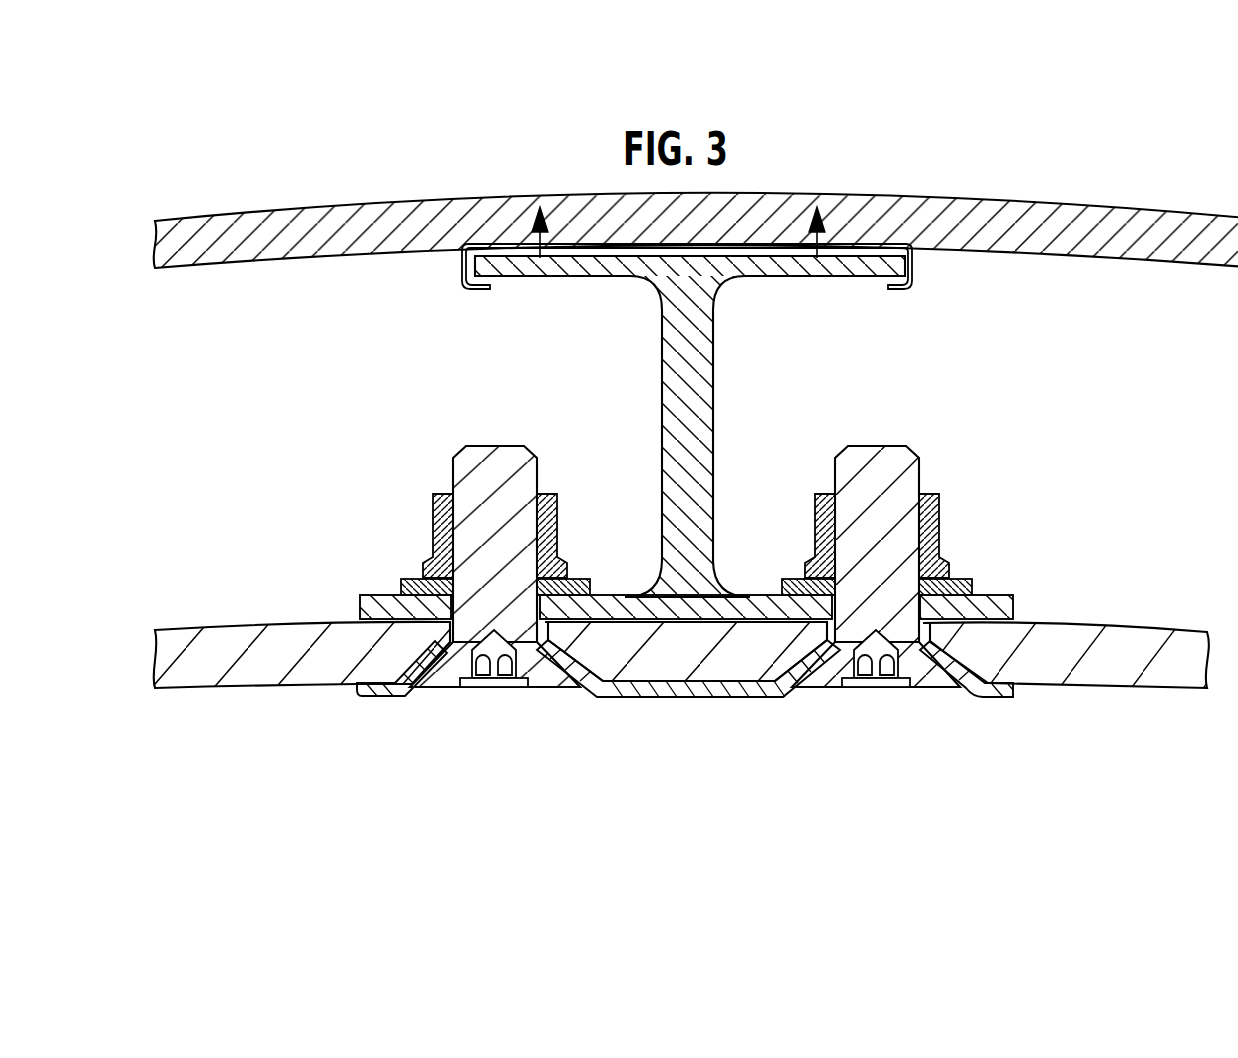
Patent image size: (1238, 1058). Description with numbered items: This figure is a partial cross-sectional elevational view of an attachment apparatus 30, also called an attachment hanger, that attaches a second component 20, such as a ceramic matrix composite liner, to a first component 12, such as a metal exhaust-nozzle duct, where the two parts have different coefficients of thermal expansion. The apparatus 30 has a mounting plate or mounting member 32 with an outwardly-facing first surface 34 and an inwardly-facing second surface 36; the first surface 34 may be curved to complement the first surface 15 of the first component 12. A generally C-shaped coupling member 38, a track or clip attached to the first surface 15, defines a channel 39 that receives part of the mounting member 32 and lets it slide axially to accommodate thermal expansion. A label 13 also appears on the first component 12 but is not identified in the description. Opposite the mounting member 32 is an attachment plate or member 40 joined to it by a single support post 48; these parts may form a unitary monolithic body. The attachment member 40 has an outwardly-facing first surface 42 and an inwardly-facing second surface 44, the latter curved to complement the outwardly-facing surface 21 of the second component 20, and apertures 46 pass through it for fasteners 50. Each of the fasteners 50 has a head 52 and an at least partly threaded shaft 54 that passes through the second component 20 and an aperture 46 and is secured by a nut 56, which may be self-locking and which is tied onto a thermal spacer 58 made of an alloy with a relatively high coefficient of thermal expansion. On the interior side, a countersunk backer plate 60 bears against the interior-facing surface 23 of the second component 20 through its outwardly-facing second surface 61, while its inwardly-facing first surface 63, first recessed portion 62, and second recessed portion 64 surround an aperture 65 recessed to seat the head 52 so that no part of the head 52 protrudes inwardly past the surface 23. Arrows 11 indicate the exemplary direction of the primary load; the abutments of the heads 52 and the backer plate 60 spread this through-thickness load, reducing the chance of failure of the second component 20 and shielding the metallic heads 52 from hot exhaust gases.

The arrows 11 is at (536, 240).
The first component 12 is at (1092, 243).
The upper panel outer surface 13 is at (1000, 208).
The first surface of the first component 15 is at (1000, 254).
The second component 20 is at (1137, 656).
The outwardly-facing surface of the second component 21 is at (272, 621).
The interior-facing surface of the second component 23 is at (258, 689).
The attachment apparatus 30 is at (393, 384).
The mounting member 32 is at (742, 279).
The first surface of the mounting member 34 is at (828, 250).
The second surface of the mounting member 36 is at (503, 279).
The coupling member 38 is at (462, 250).
The channel 39 is at (476, 289).
The attachment member 40 is at (1030, 608).
The first surface of the attachment member 42 is at (378, 596).
The second surface of the attachment member 44 is at (372, 607).
The apertures 46 is at (577, 592).
The support post 48 is at (727, 415).
The fasteners 50 is at (532, 434).
The head of the fastener 52 is at (548, 679).
The shaft of the fastener 54 is at (463, 458).
The nuts 56 is at (552, 508).
The thermal spacers 58 is at (409, 583).
The backer plate 60 is at (740, 704).
The second surface of the backer plate 61 is at (652, 676).
The first recessed portion 62 is at (395, 675).
The first surface of the backer plate 63 is at (737, 700).
The second recessed portion 64 is at (975, 678).
The aperture of the backer plate 65 is at (407, 693).